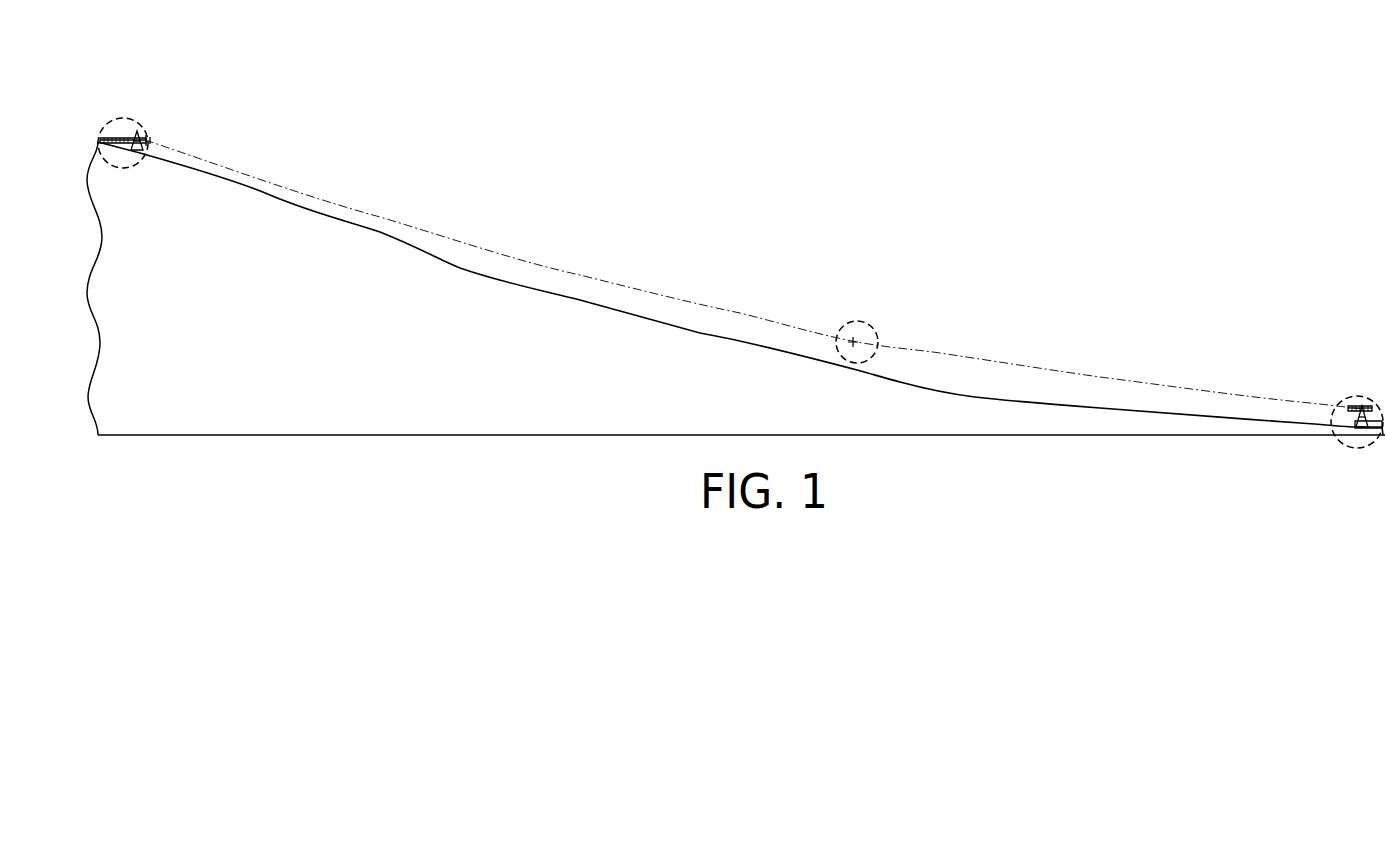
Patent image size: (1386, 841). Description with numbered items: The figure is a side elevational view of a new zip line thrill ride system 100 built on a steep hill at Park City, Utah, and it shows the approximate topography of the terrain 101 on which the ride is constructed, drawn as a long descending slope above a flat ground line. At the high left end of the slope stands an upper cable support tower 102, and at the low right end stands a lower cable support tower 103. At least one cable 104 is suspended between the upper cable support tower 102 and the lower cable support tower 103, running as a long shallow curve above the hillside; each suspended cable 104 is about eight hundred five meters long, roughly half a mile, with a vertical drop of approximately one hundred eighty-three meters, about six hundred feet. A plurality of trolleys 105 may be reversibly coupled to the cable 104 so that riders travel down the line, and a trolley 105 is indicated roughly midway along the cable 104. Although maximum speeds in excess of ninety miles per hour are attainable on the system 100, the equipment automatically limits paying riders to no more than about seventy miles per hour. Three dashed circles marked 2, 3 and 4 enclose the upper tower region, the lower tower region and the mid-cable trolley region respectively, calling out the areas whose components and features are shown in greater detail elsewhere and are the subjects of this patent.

The zip line thrill ride system 100 is at (787, 148).
The terrain 101 is at (512, 346).
The upper cable support tower 102 is at (134, 130).
The lower cable support tower 103 is at (1366, 403).
The cable 104 is at (580, 276).
The trolleys 105 is at (854, 341).
The detail area of FIG. 2 is at (146, 122).
The detail area of FIG. 3 is at (1338, 402).
The detail area of FIG. 4 is at (874, 326).